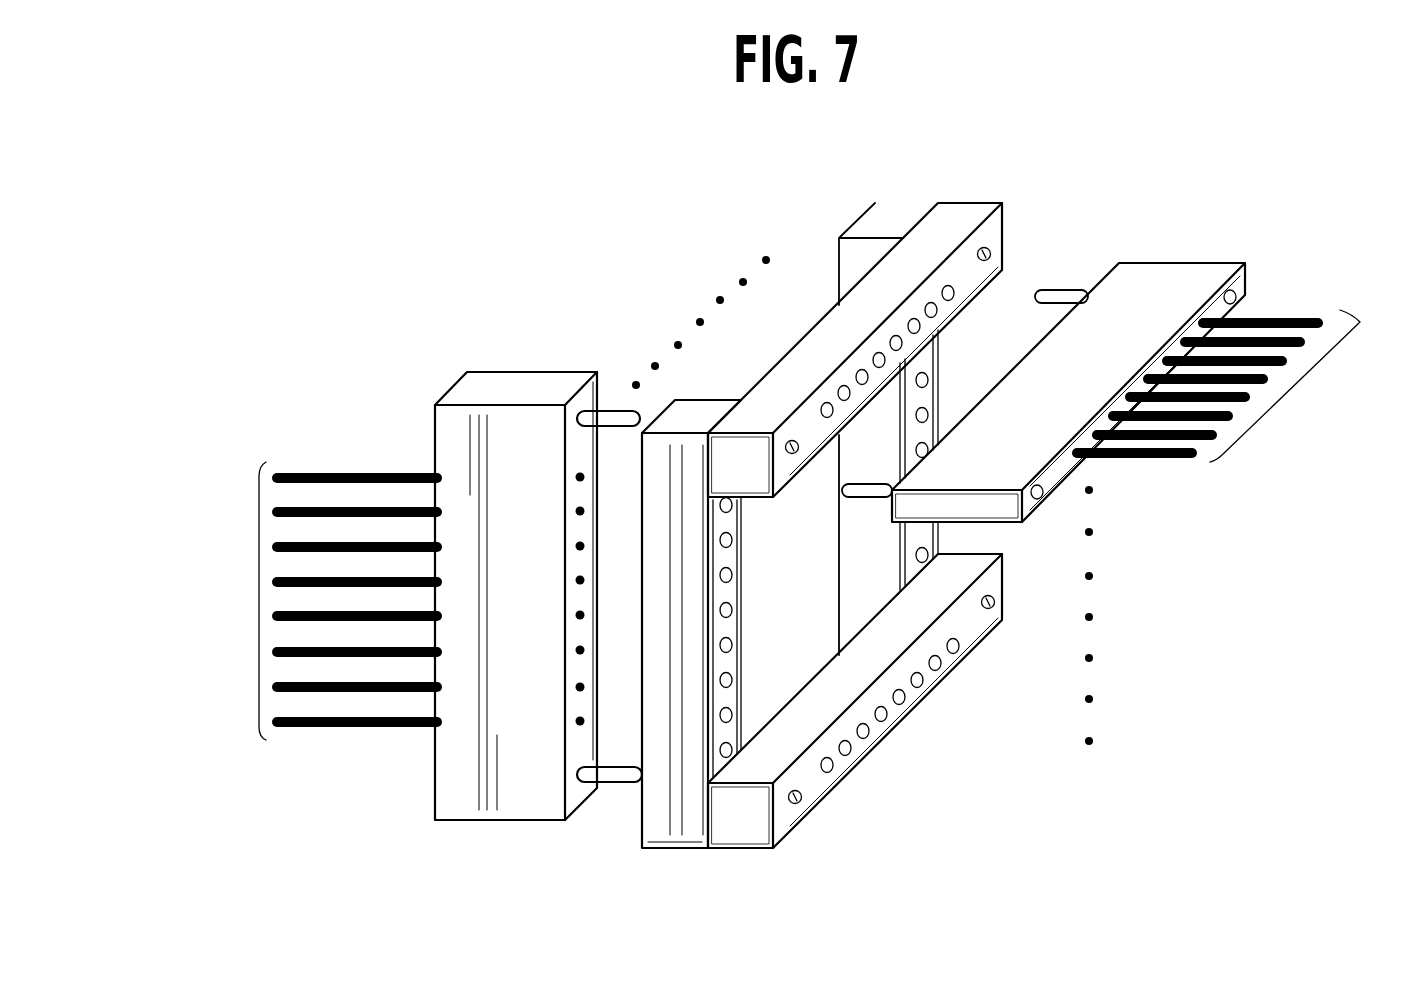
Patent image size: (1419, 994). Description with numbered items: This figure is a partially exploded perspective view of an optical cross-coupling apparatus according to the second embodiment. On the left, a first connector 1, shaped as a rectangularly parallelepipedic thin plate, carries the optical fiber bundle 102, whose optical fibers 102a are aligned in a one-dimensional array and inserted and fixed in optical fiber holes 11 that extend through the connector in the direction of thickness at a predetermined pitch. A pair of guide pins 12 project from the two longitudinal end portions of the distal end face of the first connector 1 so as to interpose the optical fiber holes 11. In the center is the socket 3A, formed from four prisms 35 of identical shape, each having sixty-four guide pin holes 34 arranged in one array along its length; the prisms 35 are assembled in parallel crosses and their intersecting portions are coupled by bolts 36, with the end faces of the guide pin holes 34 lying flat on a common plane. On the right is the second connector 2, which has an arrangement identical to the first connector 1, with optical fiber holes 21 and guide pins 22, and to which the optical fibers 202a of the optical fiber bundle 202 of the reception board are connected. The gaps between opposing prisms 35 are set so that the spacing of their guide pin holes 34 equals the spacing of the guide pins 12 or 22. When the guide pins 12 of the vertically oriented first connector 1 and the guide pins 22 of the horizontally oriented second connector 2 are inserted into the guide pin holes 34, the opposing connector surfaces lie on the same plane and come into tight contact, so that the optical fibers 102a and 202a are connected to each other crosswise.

The first connector 1 is at (538, 596).
The optical fiber holes 11 is at (582, 652).
The guide pins 12 is at (612, 787).
The optical fiber bundle 102 is at (301, 560).
The optical fibers 102a is at (352, 473).
The socket 3A is at (897, 490).
The prisms 35 is at (853, 265).
The guide pin holes 34 is at (732, 612).
The bolts 36 is at (801, 802).
The second connector 2 is at (1047, 399).
The optical fiber holes 21 is at (1133, 383).
The guide pins 22 is at (862, 492).
The optical fiber bundle 202 is at (1231, 358).
The optical fibers 202a is at (1290, 322).